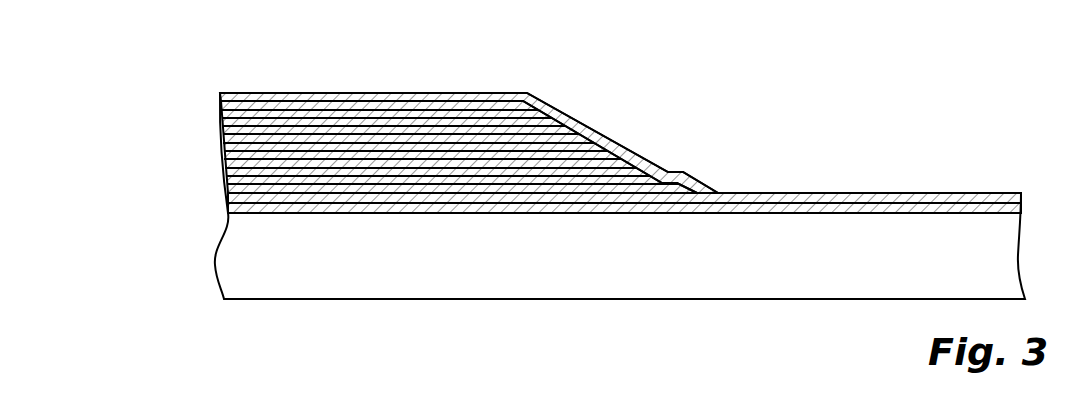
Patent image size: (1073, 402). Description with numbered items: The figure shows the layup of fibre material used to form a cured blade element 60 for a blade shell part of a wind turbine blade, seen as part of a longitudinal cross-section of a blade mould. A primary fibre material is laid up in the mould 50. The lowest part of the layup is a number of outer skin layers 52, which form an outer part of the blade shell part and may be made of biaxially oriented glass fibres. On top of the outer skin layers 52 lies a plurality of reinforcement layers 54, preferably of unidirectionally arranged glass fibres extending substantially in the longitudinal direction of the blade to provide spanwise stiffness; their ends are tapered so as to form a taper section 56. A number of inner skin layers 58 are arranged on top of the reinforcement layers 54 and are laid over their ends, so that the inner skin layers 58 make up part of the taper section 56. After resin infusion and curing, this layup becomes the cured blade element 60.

The mould 50 is at (556, 268).
The outer skin layers 52 is at (228, 208).
The reinforcement layers 54 is at (223, 144).
The taper section 56 is at (618, 163).
The inner skin layers 58 is at (236, 92).
The cured blade element 60 is at (484, 81).